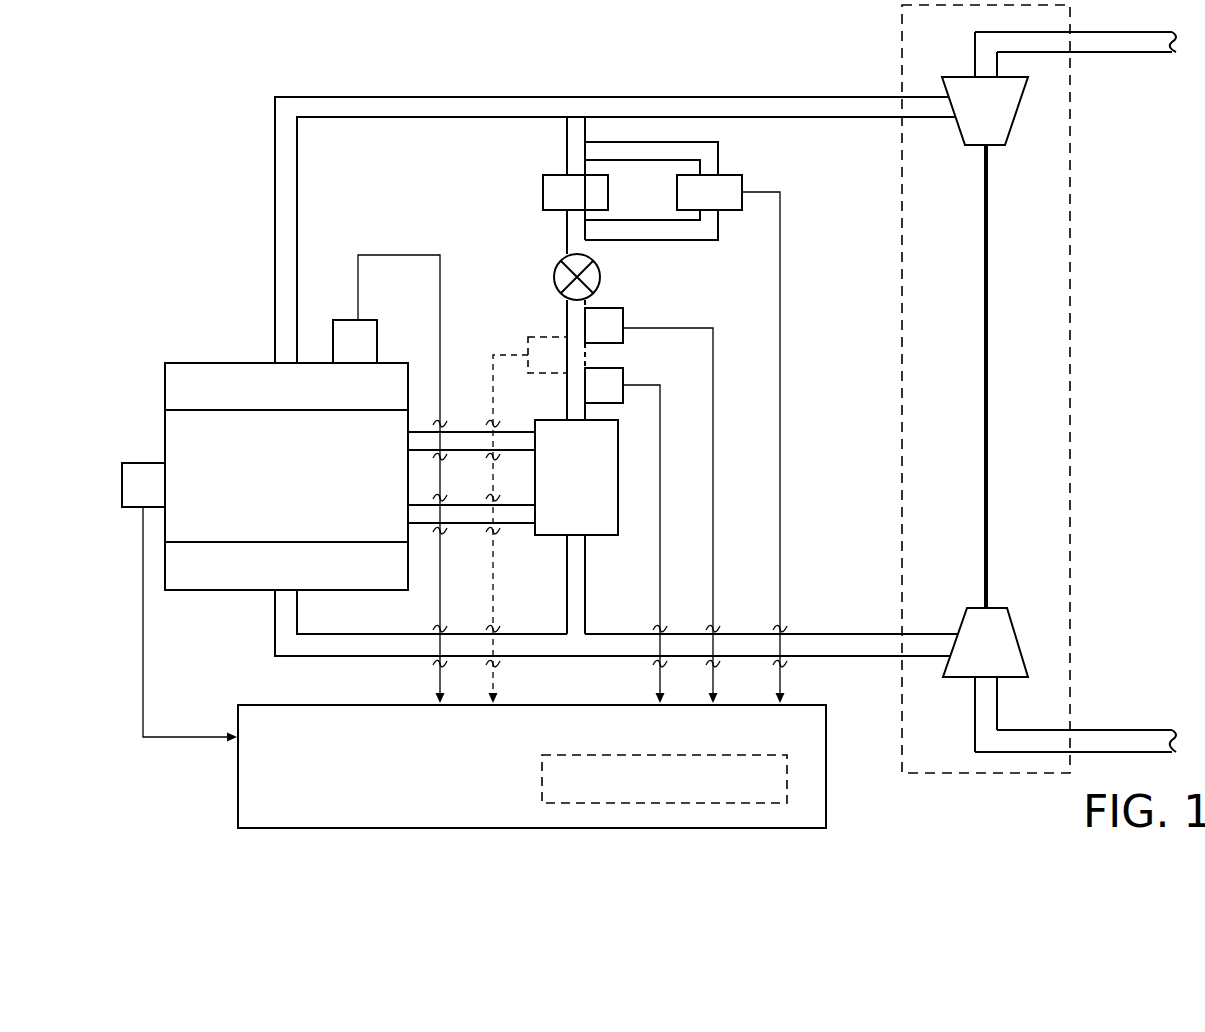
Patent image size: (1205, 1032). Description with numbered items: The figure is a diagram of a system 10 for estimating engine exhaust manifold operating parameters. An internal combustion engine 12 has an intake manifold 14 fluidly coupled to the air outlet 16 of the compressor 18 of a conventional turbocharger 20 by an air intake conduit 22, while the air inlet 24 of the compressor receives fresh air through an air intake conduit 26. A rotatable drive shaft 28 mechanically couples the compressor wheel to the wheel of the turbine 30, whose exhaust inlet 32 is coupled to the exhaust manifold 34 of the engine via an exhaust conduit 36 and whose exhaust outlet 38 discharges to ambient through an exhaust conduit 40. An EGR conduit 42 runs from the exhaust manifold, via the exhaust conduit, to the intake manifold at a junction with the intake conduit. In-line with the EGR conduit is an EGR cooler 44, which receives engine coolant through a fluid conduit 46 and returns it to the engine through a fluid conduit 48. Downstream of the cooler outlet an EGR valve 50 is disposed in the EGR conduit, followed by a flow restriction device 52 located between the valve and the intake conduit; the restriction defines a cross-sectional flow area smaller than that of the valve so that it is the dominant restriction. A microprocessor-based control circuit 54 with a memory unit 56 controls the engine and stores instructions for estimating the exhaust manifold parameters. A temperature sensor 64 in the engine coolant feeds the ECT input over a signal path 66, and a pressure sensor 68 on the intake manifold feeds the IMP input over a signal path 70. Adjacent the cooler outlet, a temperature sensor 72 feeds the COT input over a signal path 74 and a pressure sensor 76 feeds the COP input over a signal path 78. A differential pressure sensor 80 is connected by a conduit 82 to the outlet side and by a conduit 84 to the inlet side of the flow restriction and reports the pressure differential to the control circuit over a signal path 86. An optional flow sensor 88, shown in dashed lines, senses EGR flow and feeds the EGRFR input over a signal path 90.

The system 10 is at (178, 144).
The internal combustion engine 12 is at (165, 443).
The intake manifold 14 is at (178, 362).
The air outlet 16 is at (952, 108).
The compressor 18 is at (1010, 135).
The turbocharger 20 is at (1072, 322).
The air intake conduit 22 is at (490, 97).
The air inlet 24 is at (980, 75).
The air intake conduit 26 is at (1127, 53).
The drive shaft 28 is at (984, 380).
The turbine 30 is at (1008, 615).
The exhaust inlet 32 is at (950, 646).
The exhaust manifold 34 is at (222, 591).
The exhaust conduit 36 is at (833, 633).
The exhaust outlet 38 is at (985, 680).
The exhaust conduit 40 is at (1150, 730).
The EGR conduit 42 is at (566, 588).
The EGR cooler 44 is at (604, 540).
The fluid conduit 46 is at (455, 431).
The fluid conduit 48 is at (473, 524).
The EGR valve 50 is at (556, 270).
The flow restriction device 52 is at (543, 192).
The control circuit 54 is at (827, 800).
The memory unit 56 is at (541, 775).
The temperature sensor 64 is at (133, 508).
The signal path 66 is at (144, 714).
The pressure sensor 68 is at (368, 320).
The signal path 70 is at (436, 255).
The temperature sensor 72 is at (616, 308).
The signal path 74 is at (714, 393).
The pressure sensor 76 is at (624, 375).
The signal path 78 is at (659, 688).
The differential pressure sensor 80 is at (727, 212).
The conduit 82 is at (720, 158).
The conduit 84 is at (690, 243).
The signal path 86 is at (783, 262).
The flow sensor 88 is at (532, 334).
The signal path 90 is at (500, 678).